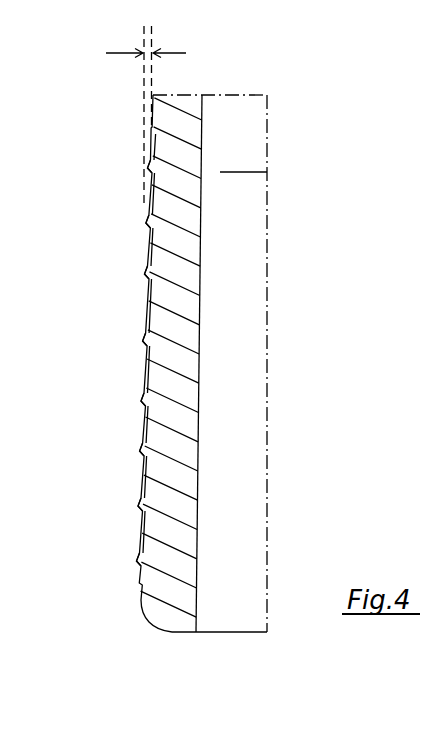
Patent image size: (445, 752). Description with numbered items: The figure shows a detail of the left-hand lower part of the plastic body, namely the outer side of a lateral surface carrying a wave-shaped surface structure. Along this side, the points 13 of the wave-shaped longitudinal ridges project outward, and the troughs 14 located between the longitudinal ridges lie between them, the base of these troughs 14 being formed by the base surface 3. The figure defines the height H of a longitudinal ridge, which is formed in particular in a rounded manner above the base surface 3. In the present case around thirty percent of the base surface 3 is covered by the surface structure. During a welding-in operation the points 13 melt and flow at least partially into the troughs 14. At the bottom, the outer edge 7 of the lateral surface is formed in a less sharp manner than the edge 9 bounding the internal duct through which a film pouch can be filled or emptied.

The base surface 3 is at (137, 547).
The edges 7 is at (148, 622).
The edges 9 is at (195, 633).
The points of the wave-shaped longitudinal ridges 13 is at (134, 346).
The troughs 14 is at (134, 380).
The height of the longitudinal ridge H is at (146, 41).